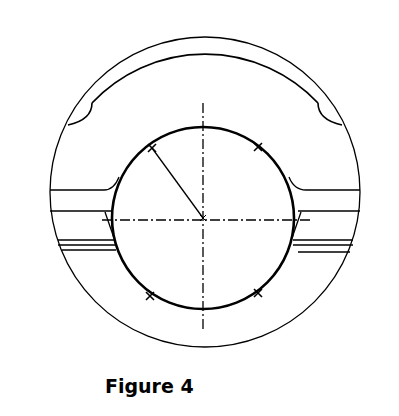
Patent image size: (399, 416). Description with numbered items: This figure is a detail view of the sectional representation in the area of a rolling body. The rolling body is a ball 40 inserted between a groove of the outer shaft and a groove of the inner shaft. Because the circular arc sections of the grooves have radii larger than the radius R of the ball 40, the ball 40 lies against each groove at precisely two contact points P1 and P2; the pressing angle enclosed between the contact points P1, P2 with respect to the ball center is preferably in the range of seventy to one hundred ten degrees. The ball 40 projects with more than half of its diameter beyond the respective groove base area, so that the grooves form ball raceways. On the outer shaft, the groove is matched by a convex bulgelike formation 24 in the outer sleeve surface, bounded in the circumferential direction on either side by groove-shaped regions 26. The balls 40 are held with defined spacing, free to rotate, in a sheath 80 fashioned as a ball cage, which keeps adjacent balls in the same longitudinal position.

The bulgelike formation 24 is at (211, 124).
The groove-shaped region 26 is at (80, 119).
The ball 40 is at (237, 190).
The sheath 80 is at (337, 225).
The radius of the ball R is at (177, 188).
The first contact point P1 is at (152, 148).
The second contact point P2 is at (258, 147).